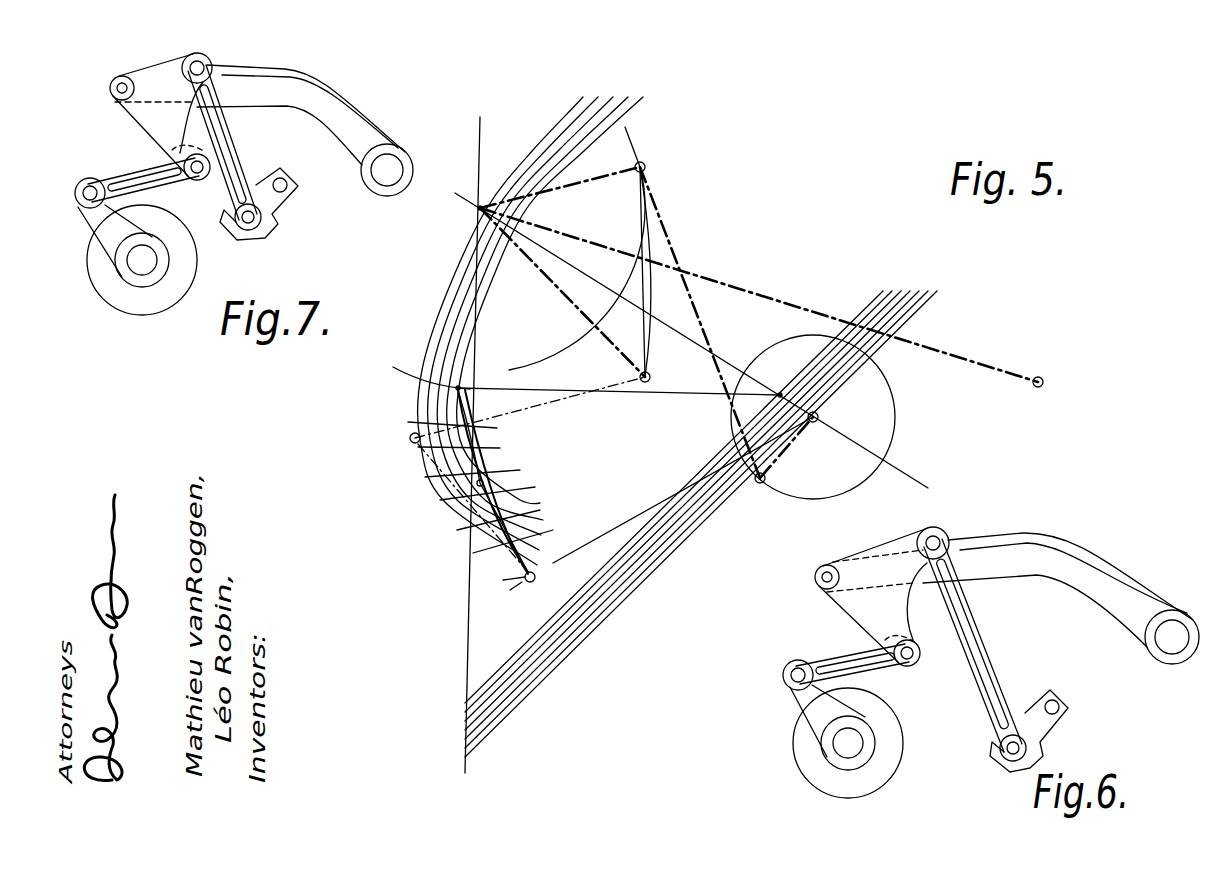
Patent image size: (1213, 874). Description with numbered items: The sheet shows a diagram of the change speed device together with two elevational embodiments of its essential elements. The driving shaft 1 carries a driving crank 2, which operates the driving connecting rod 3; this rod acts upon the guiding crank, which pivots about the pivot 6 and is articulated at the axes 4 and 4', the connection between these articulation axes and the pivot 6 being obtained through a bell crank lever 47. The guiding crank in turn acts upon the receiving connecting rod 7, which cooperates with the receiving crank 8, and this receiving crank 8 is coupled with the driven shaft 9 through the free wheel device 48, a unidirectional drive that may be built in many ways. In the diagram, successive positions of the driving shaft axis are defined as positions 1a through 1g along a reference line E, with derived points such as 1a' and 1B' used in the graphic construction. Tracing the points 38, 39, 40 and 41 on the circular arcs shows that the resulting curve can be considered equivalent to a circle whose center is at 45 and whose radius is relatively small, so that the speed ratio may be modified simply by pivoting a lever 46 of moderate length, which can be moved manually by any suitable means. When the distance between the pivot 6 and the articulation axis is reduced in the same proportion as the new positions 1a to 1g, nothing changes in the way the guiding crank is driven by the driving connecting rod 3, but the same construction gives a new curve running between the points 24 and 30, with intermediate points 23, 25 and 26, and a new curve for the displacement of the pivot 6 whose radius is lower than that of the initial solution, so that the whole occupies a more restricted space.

In FIG. 6, the driving shaft 1 is at (1053, 700).
In FIG. 7, the driving shaft 1 is at (281, 180).
In FIG. 6, the driving crank 2 is at (1047, 727).
In FIG. 7, the driving crank 2 is at (280, 202).
In FIG. 5, the driving connecting rod 3 is at (688, 256).
In FIG. 6, the driving connecting rod 3 is at (960, 615).
In FIG. 7, the driving connecting rod 3 is at (227, 145).
In FIG. 7, the axis of articulation 4 is at (224, 159).
In FIG. 6, the pivot 4' is at (919, 660).
In FIG. 5, the pivot 6 is at (487, 196).
In FIG. 5, the receiving connecting rod 7 is at (578, 398).
In FIG. 6, the receiving connecting rod 7 is at (843, 665).
In FIG. 7, the receiving connecting rod 7 is at (130, 185).
In FIG. 6, the receiving crank 8 is at (830, 712).
In FIG. 7, the receiving crank 8 is at (112, 228).
In FIG. 6, the driven shaft 9 is at (852, 743).
In FIG. 7, the driven shaft 9 is at (146, 256).
In FIG. 5, the pivot point 23 is at (410, 438).
In FIG. 5, the curve end point 24 is at (523, 589).
In FIG. 5, the trajectory curve 25 is at (532, 542).
In FIG. 5, the trajectory curve 26 is at (525, 510).
In FIG. 5, the curve end point 30 is at (492, 467).
In FIG. 5, the curve point 38 is at (468, 238).
In FIG. 5, the curve point 39 is at (462, 272).
In FIG. 5, the curve point 40 is at (457, 308).
In FIG. 5, the curve point 41 is at (452, 357).
In FIG. 6, the circle center 45 is at (1173, 633).
In FIG. 6, the lever 46 is at (1063, 560).
In FIG. 7, the lever 46 is at (318, 83).
In FIG. 6, the bell crank lever 47 is at (860, 600).
In FIG. 7, the bell crank lever 47 is at (143, 113).
In FIG. 6, the free wheel device 48 is at (892, 755).
In FIG. 7, the free wheel device 48 is at (185, 273).
In FIG. 5, the reference line E is at (635, 467).
In FIG. 5, the position line 1a is at (675, 510).
In FIG. 5, the position line 1g is at (685, 527).
In FIG. 5, the point 1a' is at (781, 429).
In FIG. 5, the point 1B' is at (813, 417).